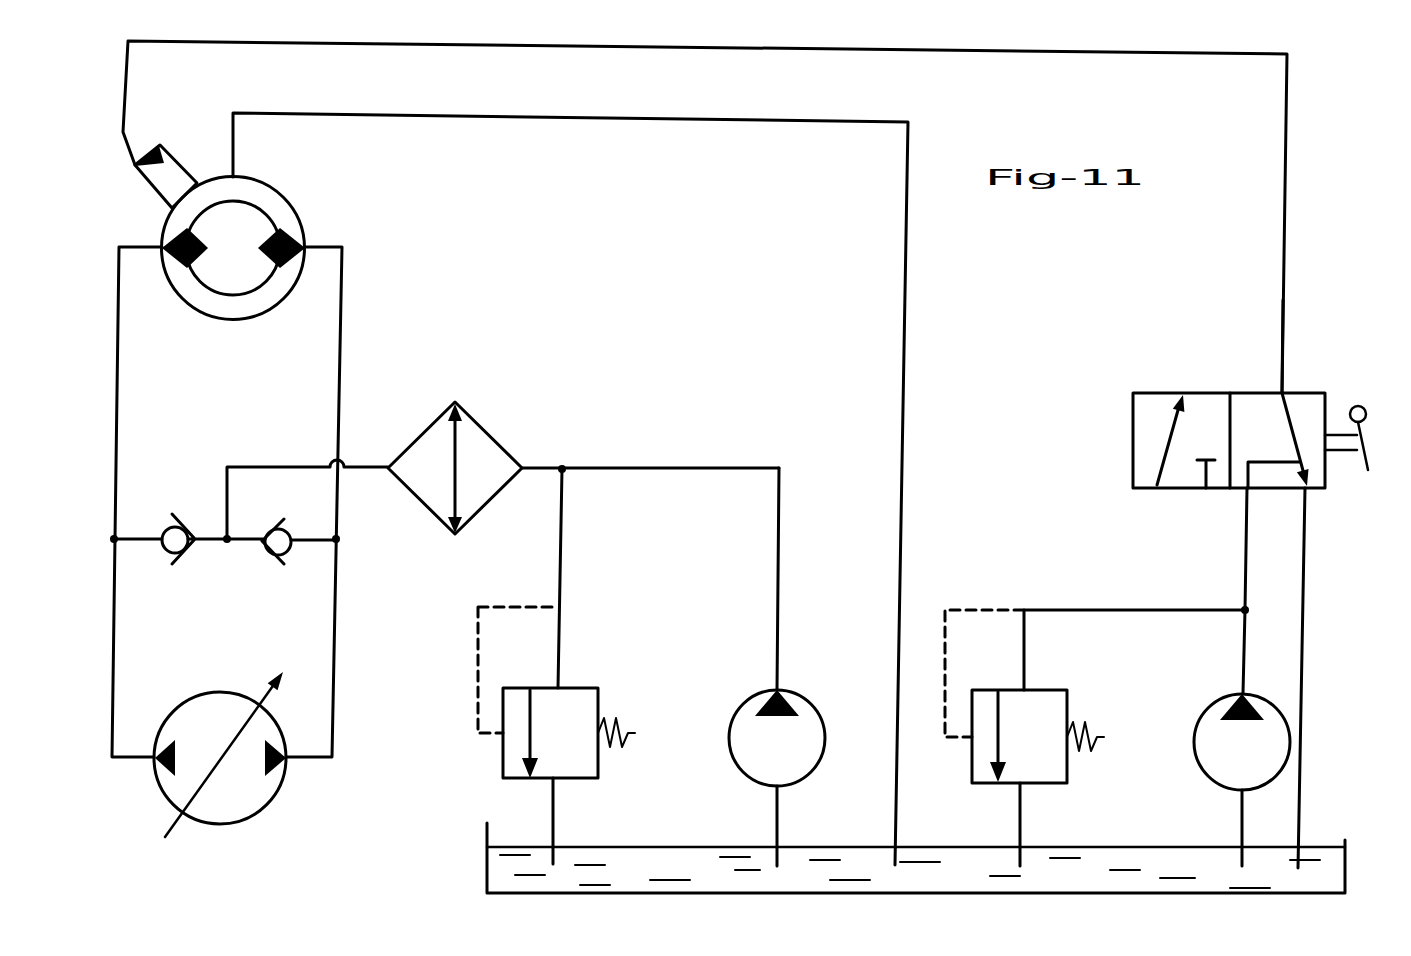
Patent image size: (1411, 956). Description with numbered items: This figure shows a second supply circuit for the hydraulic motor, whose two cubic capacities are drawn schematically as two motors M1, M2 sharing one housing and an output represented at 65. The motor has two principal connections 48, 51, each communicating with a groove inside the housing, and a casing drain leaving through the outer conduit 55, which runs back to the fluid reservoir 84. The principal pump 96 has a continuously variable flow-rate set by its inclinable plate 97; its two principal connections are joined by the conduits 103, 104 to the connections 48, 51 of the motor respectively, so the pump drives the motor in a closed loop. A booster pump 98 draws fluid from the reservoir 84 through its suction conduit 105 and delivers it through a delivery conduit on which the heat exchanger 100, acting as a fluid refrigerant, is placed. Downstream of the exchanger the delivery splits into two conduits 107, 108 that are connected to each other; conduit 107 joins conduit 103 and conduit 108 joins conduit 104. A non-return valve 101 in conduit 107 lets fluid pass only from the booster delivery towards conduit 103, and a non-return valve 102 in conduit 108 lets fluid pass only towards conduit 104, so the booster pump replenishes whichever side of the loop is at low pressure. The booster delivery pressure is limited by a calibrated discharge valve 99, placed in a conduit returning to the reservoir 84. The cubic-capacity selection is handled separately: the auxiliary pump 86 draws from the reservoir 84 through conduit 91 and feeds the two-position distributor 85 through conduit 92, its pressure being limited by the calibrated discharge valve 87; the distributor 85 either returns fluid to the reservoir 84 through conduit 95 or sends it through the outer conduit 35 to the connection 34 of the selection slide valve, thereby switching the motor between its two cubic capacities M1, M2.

The connection 34 is at (145, 145).
The motor output shaft 65 is at (178, 177).
The motor M1 is at (255, 188).
The motor M2 is at (250, 228).
The connection 48 is at (157, 234).
The connection 51 is at (311, 236).
The outer conduit 55 is at (908, 360).
The conduit 103 is at (112, 560).
The non-return valve 101 is at (172, 530).
The non-return valve 102 is at (276, 528).
The conduit 104 is at (335, 580).
The conduit 107 is at (215, 545).
The conduit 108 is at (312, 545).
The heat exchanger 100 is at (480, 435).
The calibrated discharge valve 99 is at (577, 703).
The booster pump 98 is at (807, 718).
The suction conduit 105 is at (777, 826).
The outer conduit 35 is at (1283, 284).
The two-position distributor 85 is at (1121, 394).
The conduit 92 is at (1248, 600).
The calibrated discharge valve 87 is at (1043, 697).
The auxiliary pump 86 is at (1210, 720).
The conduit 91 is at (1240, 808).
The conduit 95 is at (1297, 673).
The fluid reservoir 84 is at (1345, 840).
The principal pump 96 is at (256, 798).
The inclinable plate 97 is at (263, 698).